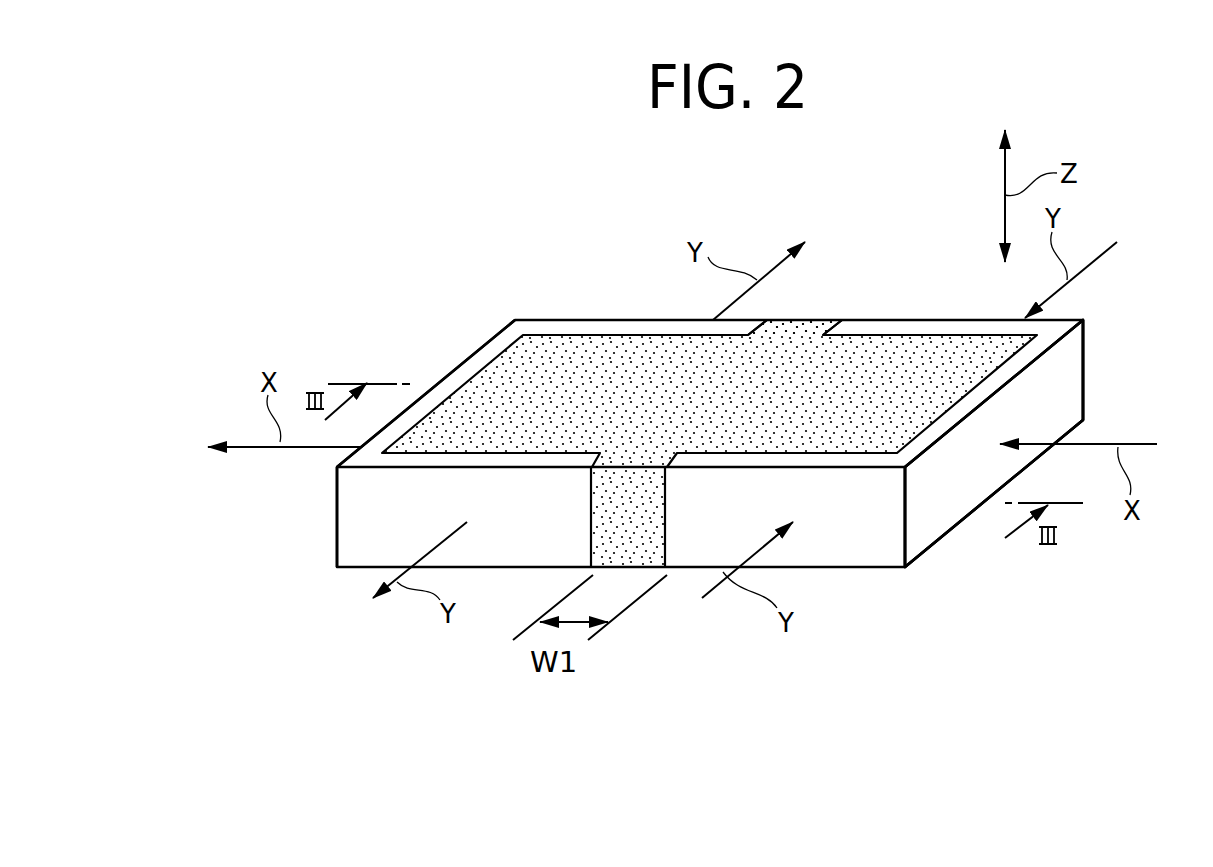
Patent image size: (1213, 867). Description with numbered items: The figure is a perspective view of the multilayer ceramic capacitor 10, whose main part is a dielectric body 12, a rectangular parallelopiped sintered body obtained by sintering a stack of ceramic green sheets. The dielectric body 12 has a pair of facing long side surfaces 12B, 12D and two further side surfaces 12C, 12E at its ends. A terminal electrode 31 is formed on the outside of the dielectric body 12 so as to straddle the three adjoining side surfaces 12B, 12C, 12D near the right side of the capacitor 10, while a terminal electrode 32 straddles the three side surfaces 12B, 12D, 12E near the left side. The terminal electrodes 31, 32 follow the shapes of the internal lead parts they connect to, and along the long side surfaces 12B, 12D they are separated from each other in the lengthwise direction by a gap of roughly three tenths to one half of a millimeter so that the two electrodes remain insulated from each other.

The multilayer ceramic capacitor 10 is at (1103, 342).
The dielectric body 12 is at (805, 357).
The side surface 12B is at (627, 512).
The side surface 12C is at (948, 502).
The side surface 12D is at (793, 320).
The side surface 12E is at (458, 363).
The terminal electrode 31 is at (1072, 377).
The terminal electrode 32 is at (335, 520).